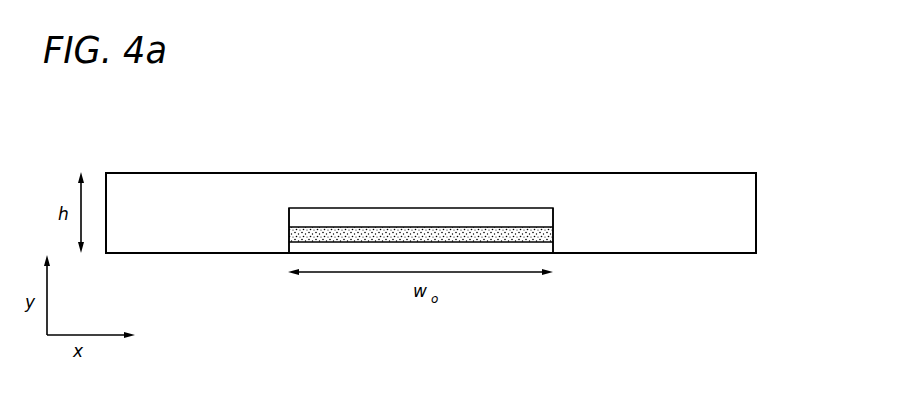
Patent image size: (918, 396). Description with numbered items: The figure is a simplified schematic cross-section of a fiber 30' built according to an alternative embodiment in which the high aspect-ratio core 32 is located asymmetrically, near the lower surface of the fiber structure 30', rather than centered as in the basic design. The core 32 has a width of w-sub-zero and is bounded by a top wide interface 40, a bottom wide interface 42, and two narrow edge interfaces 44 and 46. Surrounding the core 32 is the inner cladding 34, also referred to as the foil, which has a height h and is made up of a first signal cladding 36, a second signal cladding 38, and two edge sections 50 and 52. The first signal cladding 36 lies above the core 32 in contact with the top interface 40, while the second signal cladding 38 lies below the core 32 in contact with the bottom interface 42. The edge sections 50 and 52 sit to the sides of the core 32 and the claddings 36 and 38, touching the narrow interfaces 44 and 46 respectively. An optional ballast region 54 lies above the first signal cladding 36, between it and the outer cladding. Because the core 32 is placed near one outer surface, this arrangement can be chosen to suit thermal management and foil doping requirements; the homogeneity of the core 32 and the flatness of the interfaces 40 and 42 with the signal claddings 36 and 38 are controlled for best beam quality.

The fiber 30' is at (461, 146).
The edge section 50 is at (153, 186).
The inner cladding 34 is at (625, 172).
The edge section 52 is at (692, 190).
The ballast region 54 is at (517, 190).
The first signal cladding 36 is at (313, 217).
The top wide interface 40 is at (357, 227).
The core 32 is at (425, 233).
The bottom wide interface 42 is at (357, 242).
The narrow edge interface 44 is at (289, 235).
The narrow edge interface 46 is at (553, 232).
The second signal cladding 38 is at (463, 248).